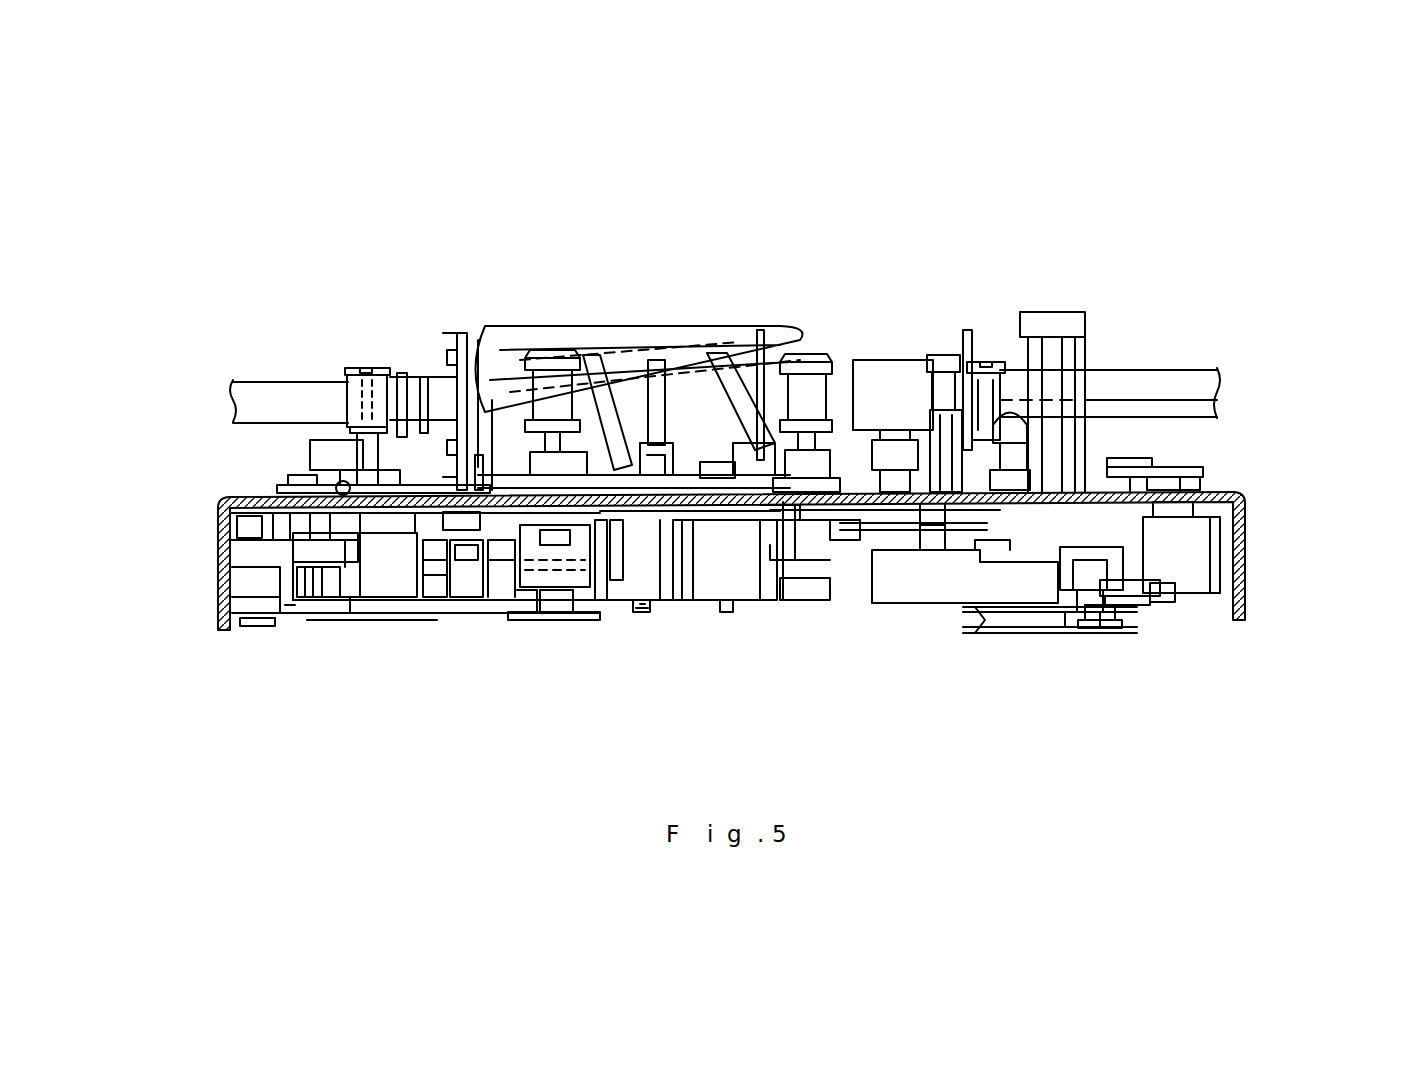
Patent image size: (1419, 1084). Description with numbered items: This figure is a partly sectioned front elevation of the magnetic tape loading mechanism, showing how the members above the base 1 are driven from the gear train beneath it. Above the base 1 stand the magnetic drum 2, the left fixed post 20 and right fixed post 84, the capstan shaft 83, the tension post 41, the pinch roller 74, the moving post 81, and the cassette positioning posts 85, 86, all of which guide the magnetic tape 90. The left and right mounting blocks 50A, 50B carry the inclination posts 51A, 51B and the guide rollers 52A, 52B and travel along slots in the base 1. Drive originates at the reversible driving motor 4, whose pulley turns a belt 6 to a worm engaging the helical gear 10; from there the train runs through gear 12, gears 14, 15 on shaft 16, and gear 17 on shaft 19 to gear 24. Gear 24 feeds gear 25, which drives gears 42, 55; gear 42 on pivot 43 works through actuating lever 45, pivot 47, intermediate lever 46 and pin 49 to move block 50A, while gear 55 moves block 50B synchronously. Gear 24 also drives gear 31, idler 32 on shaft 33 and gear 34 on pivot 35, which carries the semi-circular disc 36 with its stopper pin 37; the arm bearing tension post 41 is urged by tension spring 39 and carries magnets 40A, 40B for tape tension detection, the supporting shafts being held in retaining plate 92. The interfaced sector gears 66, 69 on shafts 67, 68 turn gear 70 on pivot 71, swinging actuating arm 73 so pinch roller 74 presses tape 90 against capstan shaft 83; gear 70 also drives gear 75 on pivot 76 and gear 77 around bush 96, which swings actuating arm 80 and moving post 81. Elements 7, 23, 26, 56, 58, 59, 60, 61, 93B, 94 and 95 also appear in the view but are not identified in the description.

The base 1 is at (1245, 527).
The magnetic drum 2 is at (772, 326).
The reversible driving motor 4 is at (460, 360).
The belt 6 is at (365, 392).
The clip 7 is at (445, 357).
The helical gear 10 is at (243, 592).
The gear 12 is at (218, 530).
The gear 14 is at (245, 555).
The gear 15 is at (215, 578).
The shaft 16 is at (307, 600).
The gear 17 is at (435, 580).
The shaft 19 is at (423, 597).
The left fixed post 20 is at (343, 481).
The pinion 23 is at (450, 547).
The gear 24 is at (472, 540).
The gear 25 is at (560, 572).
The bearing 26 is at (552, 595).
The gear 31 is at (245, 618).
The idler gear 32 is at (287, 610).
The shaft 33 is at (332, 543).
The gear 34 is at (355, 603).
The pivot 35 is at (377, 567).
The semi-circular shaped disc 36 is at (280, 494).
The stopper pin 37 is at (404, 392).
The tension spring 39 is at (275, 492).
The magnet 40A is at (493, 550).
The magnet 40B is at (850, 505).
The tension post 41 is at (640, 380).
The gear 42 is at (665, 577).
The pivot 43 is at (643, 607).
The actuating lever 45 is at (672, 560).
The intermediate lever 46 is at (610, 598).
The pivot 47 is at (650, 555).
The pin 49 is at (598, 525).
The left mounting block 50A is at (492, 430).
The right mounting block 50B is at (700, 460).
The left inclination post 51A is at (600, 375).
The right inclination post 51B is at (740, 355).
The left guide roller 52A is at (540, 372).
The right guide roller 52B is at (833, 382).
The gear 55 is at (740, 580).
The gear 56 is at (725, 607).
The bracket 58 is at (800, 600).
The plate 59 is at (782, 530).
The support plate 60 is at (785, 615).
The spacer 61 is at (797, 513).
The sector gear 66 is at (883, 533).
The shaft 67 is at (933, 540).
The shaft 68 is at (1080, 573).
The sector gear 69 is at (1000, 533).
The gear 70 is at (1245, 565).
The pivot 71 is at (1200, 483).
The actuating arm 73 is at (1193, 468).
The pinch roller 74 is at (885, 362).
The gear 75 is at (1170, 605).
The pivot 76 is at (1137, 615).
The gear 77 is at (1072, 595).
The actuating arm 80 is at (1030, 507).
The moving post 81 is at (945, 357).
The capstan shaft 83 is at (1053, 362).
The right fixed post 84 is at (975, 362).
The tape cassette positioning post 85 is at (1008, 408).
The tape cassette positioning post 86 is at (305, 488).
The magnetic tape 90 is at (1167, 385).
The retaining plate 92 is at (315, 563).
The housing 93B is at (215, 510).
The sensor 94 is at (523, 612).
The bearing 95 is at (1112, 612).
The bush 96 is at (1093, 615).